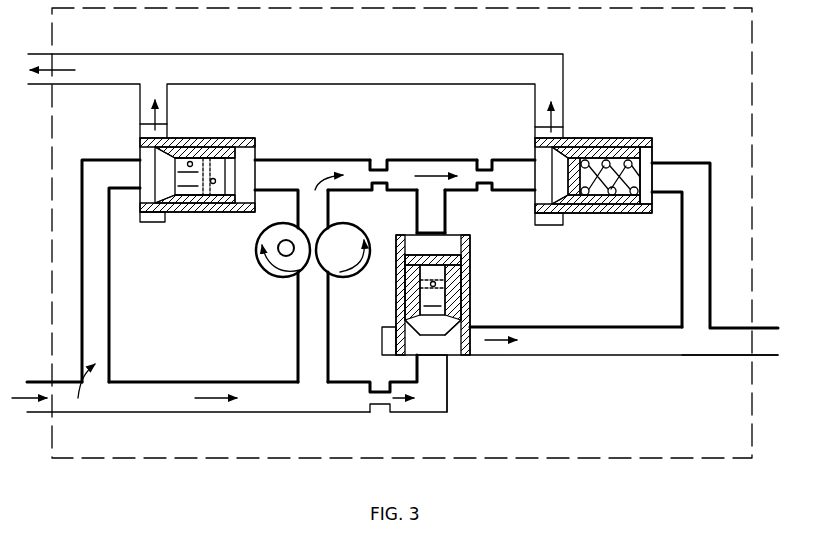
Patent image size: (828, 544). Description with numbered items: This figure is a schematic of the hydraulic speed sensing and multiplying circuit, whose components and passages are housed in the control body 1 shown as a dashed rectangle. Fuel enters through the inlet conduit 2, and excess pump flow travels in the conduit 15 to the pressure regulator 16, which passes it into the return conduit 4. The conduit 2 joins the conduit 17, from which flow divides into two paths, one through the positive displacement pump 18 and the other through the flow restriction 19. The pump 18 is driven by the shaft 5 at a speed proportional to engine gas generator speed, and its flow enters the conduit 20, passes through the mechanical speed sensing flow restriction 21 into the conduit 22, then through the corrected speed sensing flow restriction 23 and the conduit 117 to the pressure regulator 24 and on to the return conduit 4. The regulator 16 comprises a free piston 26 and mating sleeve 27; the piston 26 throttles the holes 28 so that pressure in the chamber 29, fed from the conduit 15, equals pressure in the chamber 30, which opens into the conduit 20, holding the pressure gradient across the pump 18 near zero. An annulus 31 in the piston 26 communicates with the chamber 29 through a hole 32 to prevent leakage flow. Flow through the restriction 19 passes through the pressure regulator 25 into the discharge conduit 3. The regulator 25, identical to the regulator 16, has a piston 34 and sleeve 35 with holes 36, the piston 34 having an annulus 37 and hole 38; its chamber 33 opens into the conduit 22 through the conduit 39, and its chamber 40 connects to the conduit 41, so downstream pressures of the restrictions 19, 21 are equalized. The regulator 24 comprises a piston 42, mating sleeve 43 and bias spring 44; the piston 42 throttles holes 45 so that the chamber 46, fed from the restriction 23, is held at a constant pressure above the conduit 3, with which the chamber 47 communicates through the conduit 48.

The control body 1 is at (539, 472).
The inlet conduit 2 is at (62, 404).
The discharge conduit 3 is at (765, 348).
The return conduit 4 is at (212, 66).
The shaft 5 is at (283, 278).
The conduit 15 is at (102, 337).
The pressure regulator 16 is at (255, 177).
The conduit 17 is at (198, 421).
The positive displacement pump 18 is at (347, 284).
The flow restriction 19 is at (374, 408).
The conduit 20 is at (423, 144).
The mechanical speed sensing flow restriction 21 is at (380, 162).
The conduit 22 is at (404, 166).
The corrected speed sensing flow restriction 23 is at (485, 160).
The pressure regulator 24 is at (615, 172).
The pressure regulator 25 is at (561, 275).
The free piston 26 is at (174, 150).
The mating sleeve 27 is at (238, 148).
The holes 28 is at (160, 222).
The chamber 29 is at (200, 176).
The chamber 30 is at (255, 200).
The annulus 31 is at (205, 150).
The hole 32 is at (215, 181).
The chamber 33 is at (452, 250).
The piston 34 is at (410, 236).
The sleeve 35 is at (472, 330).
The holes 36 is at (398, 338).
The annulus 37 is at (402, 284).
The hole 38 is at (436, 284).
The conduit 39 is at (447, 218).
The chamber 40 is at (433, 290).
The conduit 41 is at (436, 403).
The piston 42 is at (641, 145).
The mating sleeve 43 is at (603, 144).
The bias spring 44 is at (647, 156).
The holes 45 is at (548, 225).
The chamber 46 is at (560, 152).
The chamber 47 is at (638, 204).
The conduit 48 is at (680, 291).
The conduit 117 is at (488, 180).